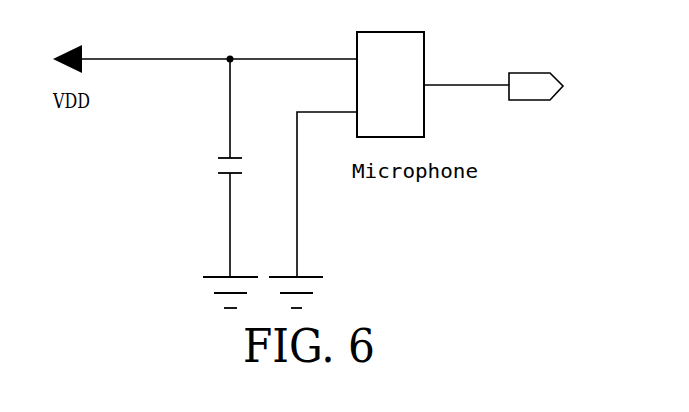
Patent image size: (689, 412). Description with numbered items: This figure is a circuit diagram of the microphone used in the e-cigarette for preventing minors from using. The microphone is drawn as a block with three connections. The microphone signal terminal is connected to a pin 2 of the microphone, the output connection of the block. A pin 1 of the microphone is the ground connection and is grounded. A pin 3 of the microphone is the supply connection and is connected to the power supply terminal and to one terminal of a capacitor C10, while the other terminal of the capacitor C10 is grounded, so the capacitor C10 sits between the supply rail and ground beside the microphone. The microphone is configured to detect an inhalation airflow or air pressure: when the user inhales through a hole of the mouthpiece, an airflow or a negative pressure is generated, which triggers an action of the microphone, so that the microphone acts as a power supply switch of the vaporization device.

The pin 1 of the microphone 1 is at (313, 200).
The pin 2 of the microphone 2 is at (493, 68).
The pin 3 of the microphone 3 is at (379, 84).
The capacitor C10 is at (211, 183).